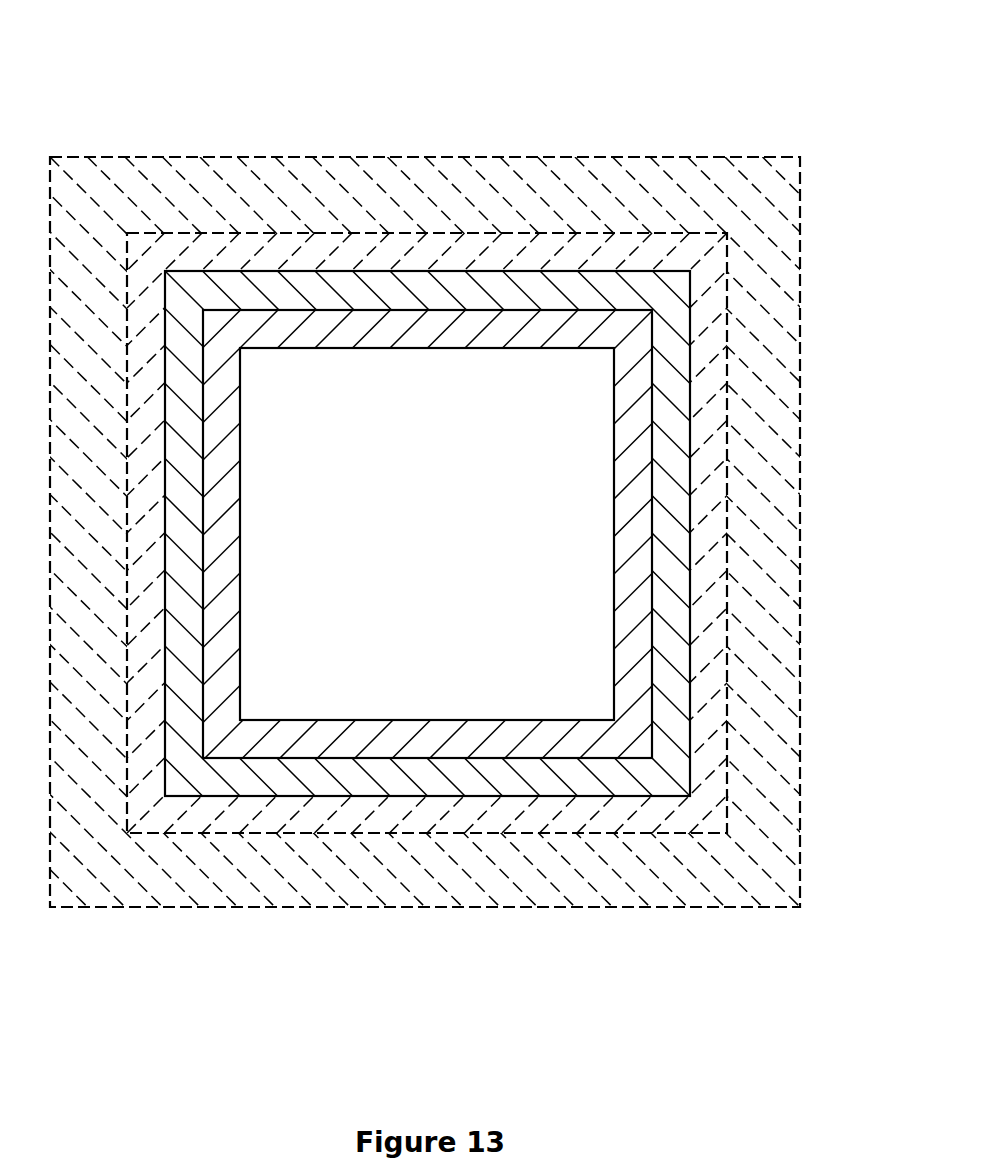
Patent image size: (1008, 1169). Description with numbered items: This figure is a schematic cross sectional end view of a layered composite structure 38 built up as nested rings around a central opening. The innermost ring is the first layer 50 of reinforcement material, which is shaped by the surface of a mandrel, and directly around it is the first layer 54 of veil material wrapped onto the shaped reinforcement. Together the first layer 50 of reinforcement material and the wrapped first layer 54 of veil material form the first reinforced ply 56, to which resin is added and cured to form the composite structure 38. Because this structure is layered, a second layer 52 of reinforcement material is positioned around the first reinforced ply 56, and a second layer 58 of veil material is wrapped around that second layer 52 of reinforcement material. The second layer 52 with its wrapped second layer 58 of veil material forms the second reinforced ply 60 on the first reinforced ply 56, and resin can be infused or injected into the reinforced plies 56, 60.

The composite structure 38 is at (504, 496).
The first layer of reinforcement material 50 is at (417, 740).
The second layer of reinforcement material 52 is at (710, 413).
The first layer of veil material 54 is at (567, 777).
The first reinforced ply 56 is at (504, 631).
The second layer of veil material 58 is at (762, 498).
The second reinforced ply 60 is at (504, 532).